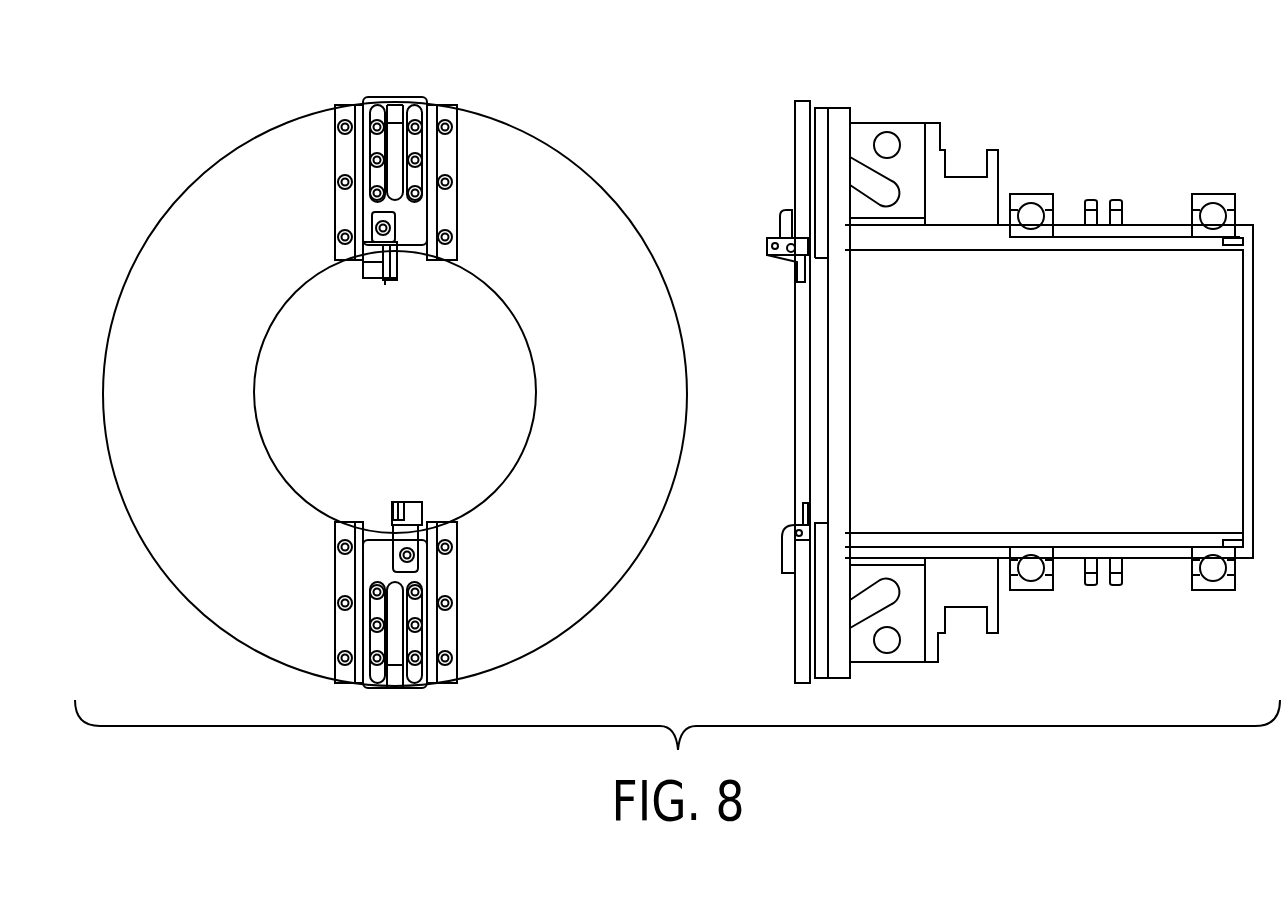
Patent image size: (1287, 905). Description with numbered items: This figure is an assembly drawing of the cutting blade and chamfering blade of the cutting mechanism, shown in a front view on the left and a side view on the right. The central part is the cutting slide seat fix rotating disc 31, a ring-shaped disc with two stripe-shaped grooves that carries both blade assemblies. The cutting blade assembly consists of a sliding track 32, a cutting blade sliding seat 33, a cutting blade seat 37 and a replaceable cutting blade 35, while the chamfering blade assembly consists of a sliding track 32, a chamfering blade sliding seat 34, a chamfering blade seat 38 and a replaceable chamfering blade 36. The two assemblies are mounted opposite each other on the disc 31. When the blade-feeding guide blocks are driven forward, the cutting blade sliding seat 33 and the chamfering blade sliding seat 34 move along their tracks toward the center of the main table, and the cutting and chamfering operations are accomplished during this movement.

The cutting slide seat fix rotating disc 31 is at (560, 178).
The sliding track 32 is at (448, 124).
The cutting blade sliding seat 33 is at (416, 642).
The chamfering blade sliding seat 34 is at (431, 107).
The replaceable cutting blade 35 is at (398, 506).
The replaceable chamfering blade 36 is at (384, 284).
The cutting blade seat 37 is at (416, 514).
The chamfering blade seat 38 is at (386, 262).